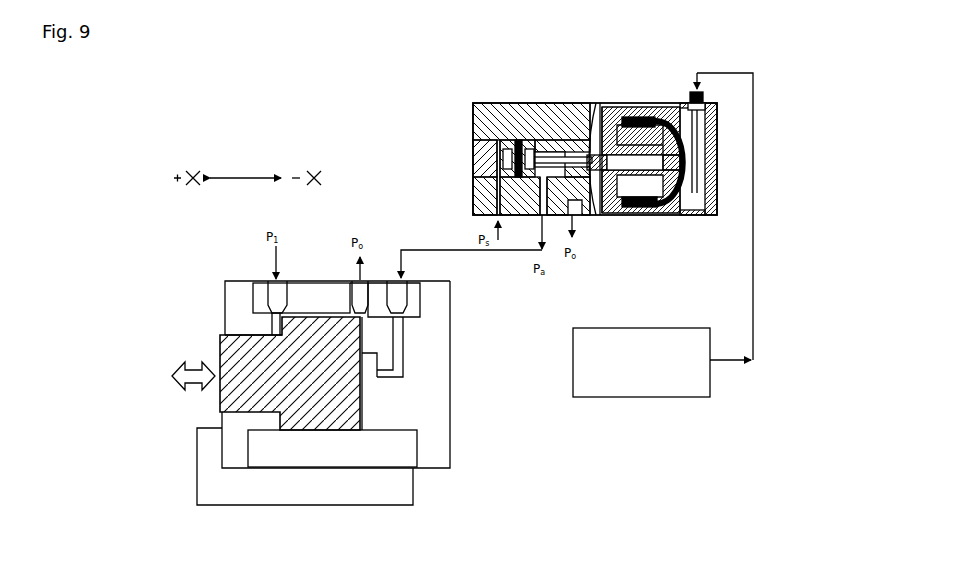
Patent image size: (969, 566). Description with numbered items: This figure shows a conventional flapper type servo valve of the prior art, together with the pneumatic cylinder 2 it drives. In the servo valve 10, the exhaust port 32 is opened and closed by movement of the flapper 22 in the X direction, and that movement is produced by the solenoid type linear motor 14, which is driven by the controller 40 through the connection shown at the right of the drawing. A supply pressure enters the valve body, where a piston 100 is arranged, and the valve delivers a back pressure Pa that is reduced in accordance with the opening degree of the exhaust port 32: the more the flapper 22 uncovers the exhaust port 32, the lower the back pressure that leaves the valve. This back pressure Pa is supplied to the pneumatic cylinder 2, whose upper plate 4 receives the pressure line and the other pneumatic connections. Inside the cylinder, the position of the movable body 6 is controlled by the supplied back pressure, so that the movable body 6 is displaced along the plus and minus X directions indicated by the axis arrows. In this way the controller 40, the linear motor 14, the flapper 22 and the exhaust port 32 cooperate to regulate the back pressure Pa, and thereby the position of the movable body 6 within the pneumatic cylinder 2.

The pneumatic cylinder 2 is at (433, 493).
The top plate (air bearing housing) 4 is at (238, 307).
The movable body 6 is at (232, 358).
The pressure regulating valve 10 is at (561, 139).
The solenoid type linear motor 14 is at (670, 123).
The flapper 22 is at (594, 104).
The exhaust port 32 is at (563, 160).
The controller 40 is at (650, 398).
The piston 100 is at (520, 143).